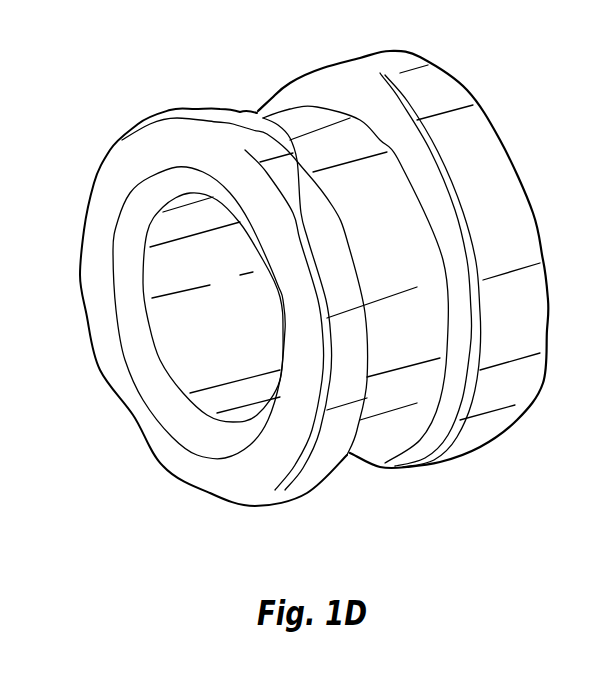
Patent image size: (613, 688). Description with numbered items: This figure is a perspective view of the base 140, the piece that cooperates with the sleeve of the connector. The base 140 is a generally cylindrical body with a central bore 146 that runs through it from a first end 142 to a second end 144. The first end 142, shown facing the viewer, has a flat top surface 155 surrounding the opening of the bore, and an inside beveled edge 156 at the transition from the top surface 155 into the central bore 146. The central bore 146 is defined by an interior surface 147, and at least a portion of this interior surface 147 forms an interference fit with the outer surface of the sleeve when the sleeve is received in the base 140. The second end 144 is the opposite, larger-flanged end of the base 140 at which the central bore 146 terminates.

The base 140 is at (309, 298).
The first end 142 is at (110, 390).
The second end 144 is at (505, 118).
The central bore 146 is at (187, 260).
The interior surface 147 is at (208, 403).
The top surface 155 is at (100, 350).
The inside beveled edge 156 is at (160, 400).